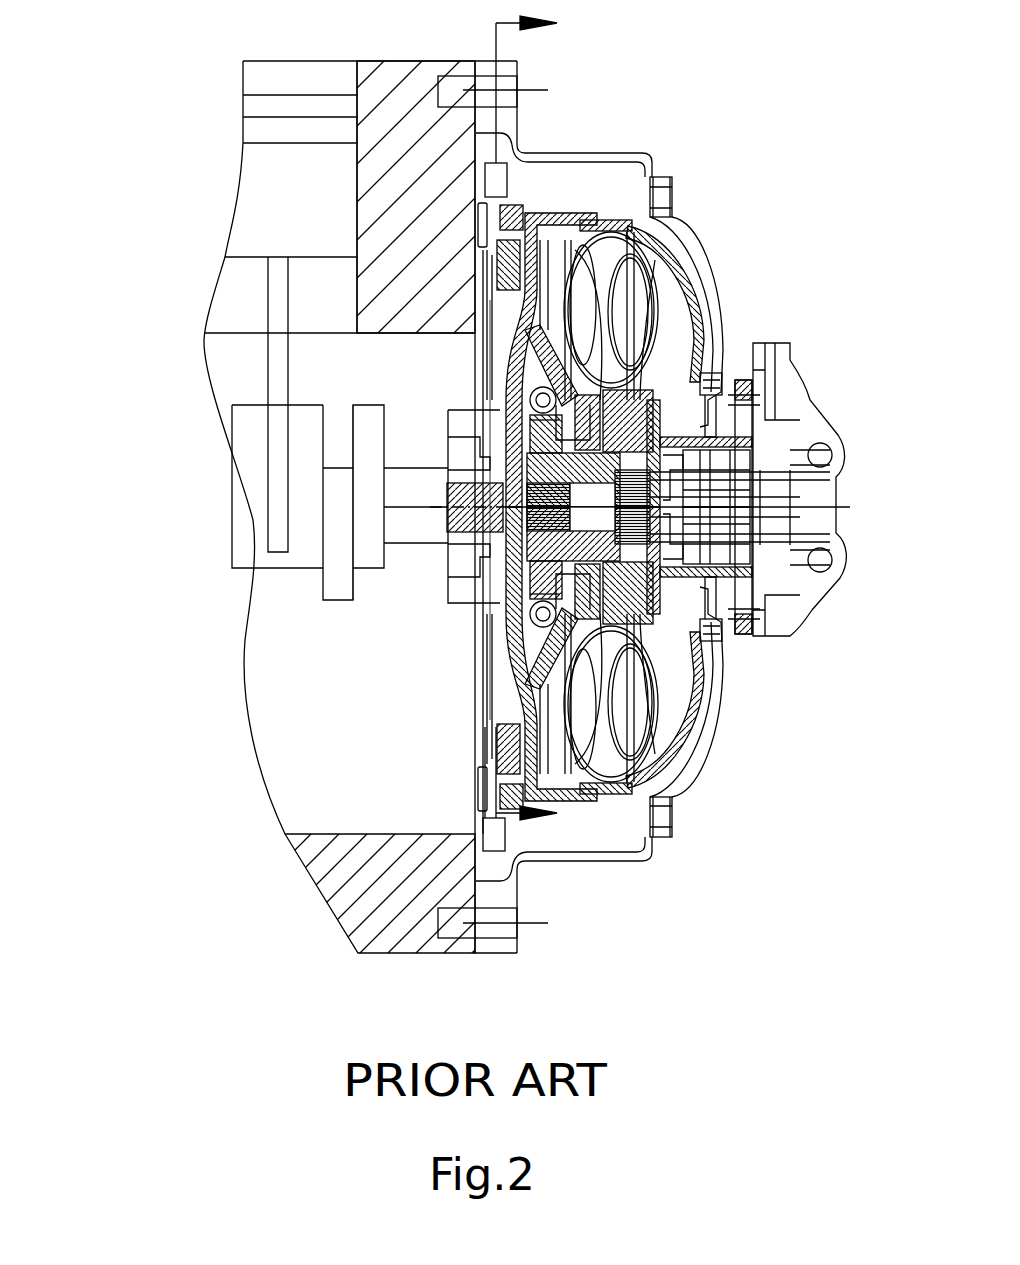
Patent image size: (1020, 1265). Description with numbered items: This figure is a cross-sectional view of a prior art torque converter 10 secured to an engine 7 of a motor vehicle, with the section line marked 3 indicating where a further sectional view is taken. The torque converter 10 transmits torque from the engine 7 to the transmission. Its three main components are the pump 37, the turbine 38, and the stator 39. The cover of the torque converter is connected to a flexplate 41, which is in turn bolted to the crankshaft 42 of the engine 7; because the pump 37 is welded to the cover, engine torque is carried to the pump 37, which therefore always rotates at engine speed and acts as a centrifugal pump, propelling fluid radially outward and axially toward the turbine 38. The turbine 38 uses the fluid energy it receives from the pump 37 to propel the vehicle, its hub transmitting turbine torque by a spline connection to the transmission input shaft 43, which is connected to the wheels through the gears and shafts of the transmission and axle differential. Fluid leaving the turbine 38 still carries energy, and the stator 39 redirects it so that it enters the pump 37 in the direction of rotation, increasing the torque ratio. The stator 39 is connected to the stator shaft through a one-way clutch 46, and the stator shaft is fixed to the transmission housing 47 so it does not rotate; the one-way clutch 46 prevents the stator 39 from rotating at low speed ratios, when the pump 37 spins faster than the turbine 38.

The section line 3- 3 is at (535, 431).
The engine 7 is at (483, 865).
The torque converter 10 is at (690, 265).
The pump 37 is at (688, 748).
The turbine 38 is at (570, 748).
The stator 39 is at (603, 660).
The flexplate 41 is at (500, 640).
The crankshaft 42 is at (433, 552).
The transmission input shaft 43 is at (778, 525).
The one-way clutch 46 is at (700, 612).
The transmission housing 47 is at (777, 455).